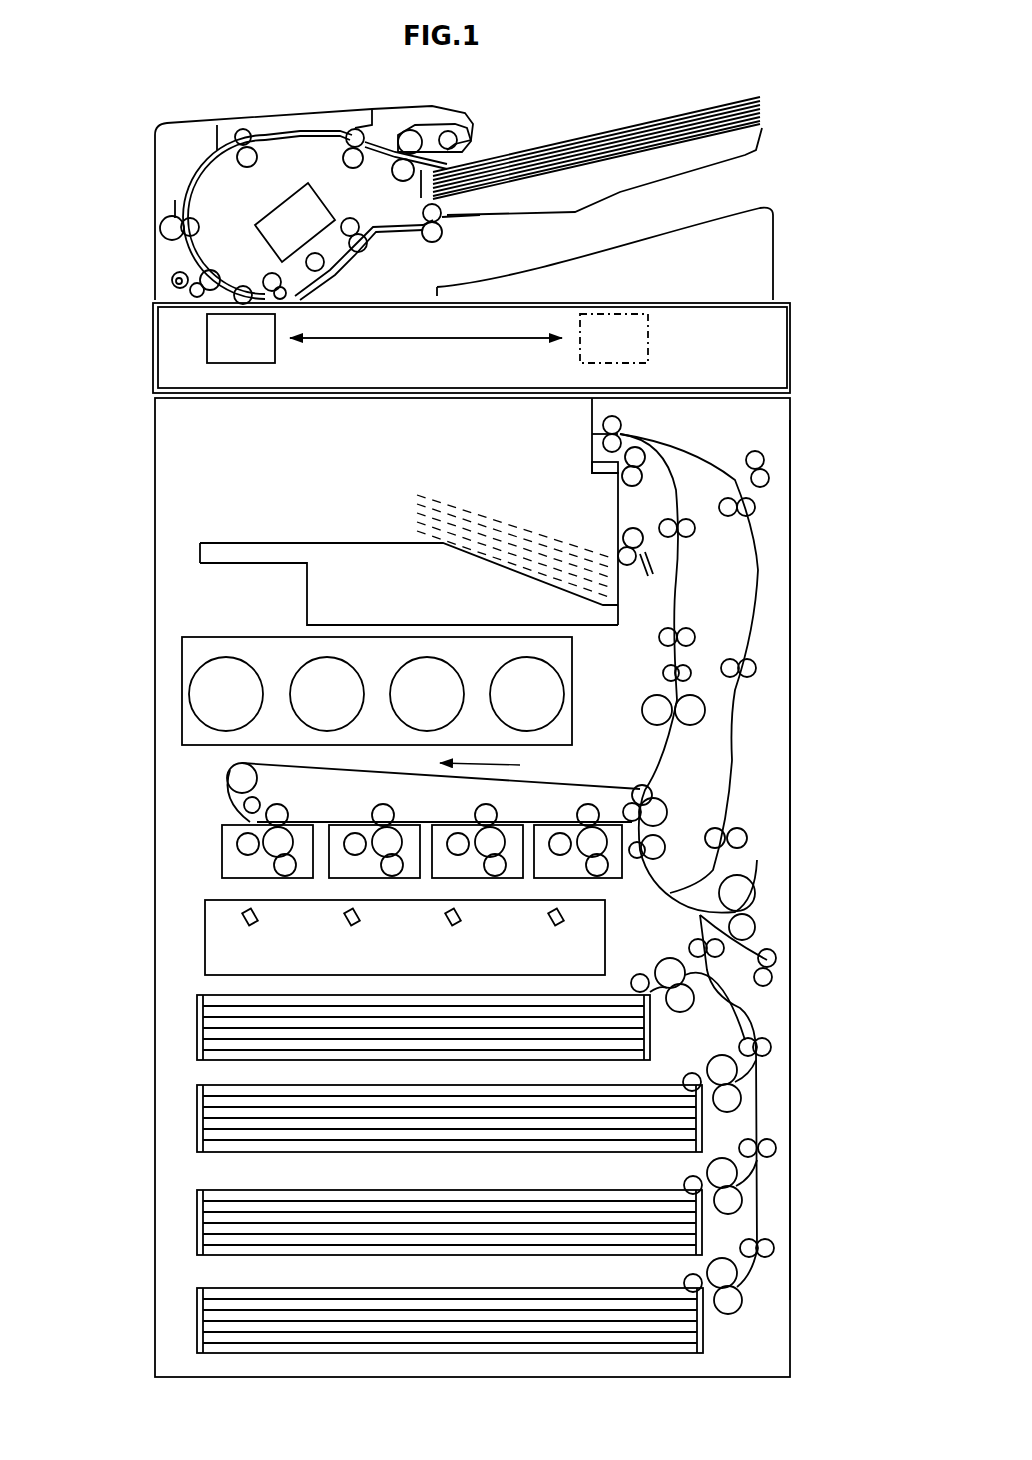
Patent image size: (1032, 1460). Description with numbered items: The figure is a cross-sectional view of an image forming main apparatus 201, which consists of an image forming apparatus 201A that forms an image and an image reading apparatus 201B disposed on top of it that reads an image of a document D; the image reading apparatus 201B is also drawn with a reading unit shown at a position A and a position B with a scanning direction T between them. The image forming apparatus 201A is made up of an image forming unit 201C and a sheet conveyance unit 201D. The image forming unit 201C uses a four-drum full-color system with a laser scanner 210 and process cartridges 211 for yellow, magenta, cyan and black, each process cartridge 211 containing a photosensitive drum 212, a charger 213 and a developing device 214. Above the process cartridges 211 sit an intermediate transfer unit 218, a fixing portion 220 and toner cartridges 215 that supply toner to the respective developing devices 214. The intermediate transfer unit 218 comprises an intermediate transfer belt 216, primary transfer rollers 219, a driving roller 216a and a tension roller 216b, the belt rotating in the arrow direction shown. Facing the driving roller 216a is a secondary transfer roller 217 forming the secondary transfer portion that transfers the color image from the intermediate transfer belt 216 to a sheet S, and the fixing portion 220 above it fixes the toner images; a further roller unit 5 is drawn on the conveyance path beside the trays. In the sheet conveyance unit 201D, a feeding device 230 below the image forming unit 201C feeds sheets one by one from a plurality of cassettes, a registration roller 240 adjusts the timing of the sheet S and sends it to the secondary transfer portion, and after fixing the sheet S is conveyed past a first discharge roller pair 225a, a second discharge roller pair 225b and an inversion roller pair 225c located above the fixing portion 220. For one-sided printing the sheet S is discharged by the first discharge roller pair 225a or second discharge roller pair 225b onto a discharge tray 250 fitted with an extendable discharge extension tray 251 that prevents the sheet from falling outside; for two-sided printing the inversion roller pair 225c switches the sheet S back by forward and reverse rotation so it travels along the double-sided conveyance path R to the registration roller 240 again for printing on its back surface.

The image forming main apparatus 201 is at (806, 403).
The image forming apparatus 201A is at (792, 548).
The image reading apparatus 201B is at (524, 130).
The image forming unit 201C is at (197, 800).
The sheet conveyance unit 201D is at (752, 440).
The document D is at (691, 102).
The sheet S is at (614, 993).
The double-sided conveyance path R is at (192, 440).
The scanning direction T is at (426, 351).
The reading unit home position A is at (241, 353).
The reading unit moved position B is at (614, 353).
The fixing device 5 is at (782, 985).
The laser scanner 210 is at (222, 950).
The process cartridges 211 is at (218, 870).
The photosensitive drum 212 is at (284, 840).
The charger 213 is at (248, 845).
The developing device 214 is at (260, 826).
The toner cartridges 215 is at (220, 690).
The intermediate transfer belt 216 is at (602, 792).
The driving roller 216a is at (660, 772).
The tension roller 216b is at (240, 778).
The secondary transfer roller 217 is at (668, 812).
The intermediate transfer unit 218 is at (575, 772).
The primary transfer rollers 219 is at (480, 818).
The fixing portion 220 is at (702, 712).
The first discharge roller pair 225a is at (632, 540).
The second discharge roller pair 225b is at (598, 464).
The inversion roller pair 225c is at (622, 427).
The feeding device 230 is at (192, 1043).
The registration roller 240 is at (667, 848).
The discharge tray 250 is at (345, 560).
The discharge extension tray 251 is at (210, 555).